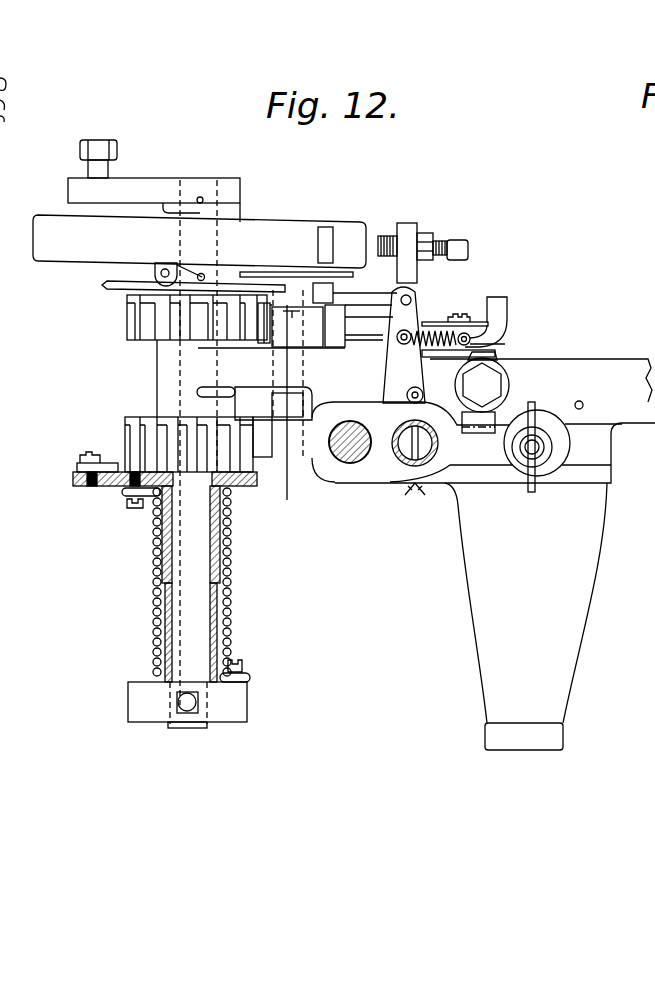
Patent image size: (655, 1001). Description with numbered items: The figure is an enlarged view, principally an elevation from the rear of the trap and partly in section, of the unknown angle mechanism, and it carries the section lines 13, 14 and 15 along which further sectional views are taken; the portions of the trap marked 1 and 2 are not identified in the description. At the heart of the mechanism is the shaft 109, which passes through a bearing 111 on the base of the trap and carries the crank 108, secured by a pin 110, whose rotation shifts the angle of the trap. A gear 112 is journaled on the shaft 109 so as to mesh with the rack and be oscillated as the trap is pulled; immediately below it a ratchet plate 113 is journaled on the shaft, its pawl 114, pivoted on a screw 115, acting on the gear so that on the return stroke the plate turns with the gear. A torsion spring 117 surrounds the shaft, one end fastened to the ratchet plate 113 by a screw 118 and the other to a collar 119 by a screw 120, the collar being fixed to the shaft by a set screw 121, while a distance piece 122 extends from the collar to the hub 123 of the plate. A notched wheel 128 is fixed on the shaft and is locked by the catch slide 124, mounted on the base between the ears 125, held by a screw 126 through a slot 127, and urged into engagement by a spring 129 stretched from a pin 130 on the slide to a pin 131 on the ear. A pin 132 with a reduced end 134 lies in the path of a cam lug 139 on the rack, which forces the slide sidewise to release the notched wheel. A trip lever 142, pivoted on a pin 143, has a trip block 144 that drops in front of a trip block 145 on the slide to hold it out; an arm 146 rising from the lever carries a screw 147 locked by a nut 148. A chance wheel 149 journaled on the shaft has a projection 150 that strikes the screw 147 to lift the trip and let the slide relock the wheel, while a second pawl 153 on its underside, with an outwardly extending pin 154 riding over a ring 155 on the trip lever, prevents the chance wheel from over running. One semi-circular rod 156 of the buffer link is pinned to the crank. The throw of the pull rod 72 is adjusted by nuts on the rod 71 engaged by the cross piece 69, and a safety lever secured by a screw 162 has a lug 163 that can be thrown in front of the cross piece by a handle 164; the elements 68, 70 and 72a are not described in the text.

The frame 1 is at (483, 427).
The handle 2 is at (526, 616).
The section line 13— 13 is at (92, 272).
The section line 14— 14 is at (295, 409).
The section line 15— 15 is at (235, 395).
The pivot screw boss 68 is at (536, 447).
The cross piece 69 is at (398, 407).
The pin 70 is at (548, 423).
The rod 71 is at (345, 461).
The pull rod 72 is at (401, 451).
The pin 72a is at (418, 445).
The crank 108 is at (154, 200).
The shaft 109 is at (191, 584).
The pin 110 is at (202, 197).
The bearing 111 is at (177, 368).
The gear 112 is at (125, 427).
The ratchet plate 113 is at (105, 487).
The pawl 114 is at (77, 466).
The screw 115 is at (90, 455).
The torsion spring 117 is at (231, 548).
The screw 118 is at (134, 509).
The collar 119 is at (240, 700).
The screw 120 is at (243, 665).
The set screw 121 is at (177, 702).
The distance piece 122 is at (231, 613).
The hub 123 is at (231, 516).
The catch slide 124 is at (359, 326).
The ears 125 is at (411, 311).
The screw 126 is at (493, 301).
The slot 127 is at (445, 352).
The notched wheel 128 is at (127, 314).
The spring 129 is at (470, 334).
The pin 130 is at (497, 344).
The pin 131 is at (404, 347).
The pin 132 is at (283, 397).
The reduced end 134 is at (297, 327).
The cam lug 139 is at (278, 417).
The trip lever 142 is at (365, 296).
The pin 143 is at (453, 314).
The trip block 144 is at (324, 287).
The trip block 145 is at (335, 346).
The arm 146 is at (411, 228).
The screw 147 is at (386, 236).
The nut 148 is at (441, 240).
The chance wheel 149 is at (199, 241).
The projection 150 is at (326, 233).
The second pawl 153 is at (178, 280).
The pin 154 is at (203, 276).
The ring 155 is at (108, 284).
The semi-circular rod 156 is at (95, 150).
The screw 162 is at (482, 385).
The lug 163 is at (488, 418).
The handle 164 is at (497, 357).